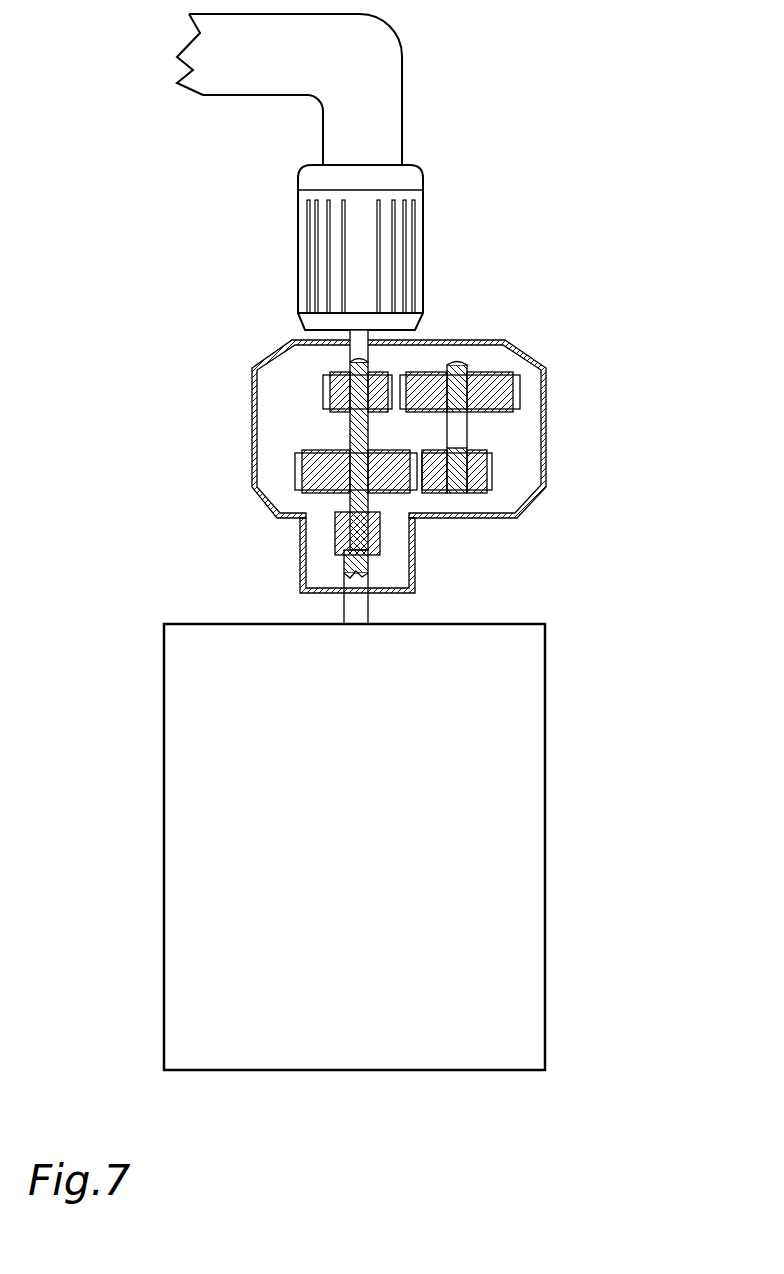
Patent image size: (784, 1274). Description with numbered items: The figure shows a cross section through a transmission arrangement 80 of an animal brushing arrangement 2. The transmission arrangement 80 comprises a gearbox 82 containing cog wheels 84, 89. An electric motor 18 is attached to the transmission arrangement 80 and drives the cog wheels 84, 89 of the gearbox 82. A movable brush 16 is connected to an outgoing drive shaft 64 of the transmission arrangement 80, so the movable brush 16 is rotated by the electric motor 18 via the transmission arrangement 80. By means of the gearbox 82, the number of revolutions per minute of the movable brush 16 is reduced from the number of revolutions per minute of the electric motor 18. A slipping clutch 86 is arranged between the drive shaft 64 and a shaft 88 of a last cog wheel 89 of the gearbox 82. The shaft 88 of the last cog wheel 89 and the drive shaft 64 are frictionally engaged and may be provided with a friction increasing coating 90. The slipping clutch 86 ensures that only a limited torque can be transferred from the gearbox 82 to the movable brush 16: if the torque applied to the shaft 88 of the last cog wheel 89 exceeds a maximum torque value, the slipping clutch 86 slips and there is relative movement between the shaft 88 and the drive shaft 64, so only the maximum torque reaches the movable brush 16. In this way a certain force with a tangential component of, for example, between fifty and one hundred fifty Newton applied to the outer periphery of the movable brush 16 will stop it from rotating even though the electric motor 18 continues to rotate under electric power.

The animal brushing arrangement 2 is at (640, 151).
The movable brush 16 is at (202, 833).
The electric motor 18 is at (333, 252).
The drive shaft 64 is at (362, 605).
The transmission arrangement 80 is at (360, 454).
The gearbox 82 is at (258, 442).
The cog wheels 84 is at (338, 393).
The slipping clutch 86 is at (405, 557).
The shaft 88 is at (342, 502).
The last cog wheel 89 is at (333, 465).
The friction increasing coating 90 is at (338, 540).